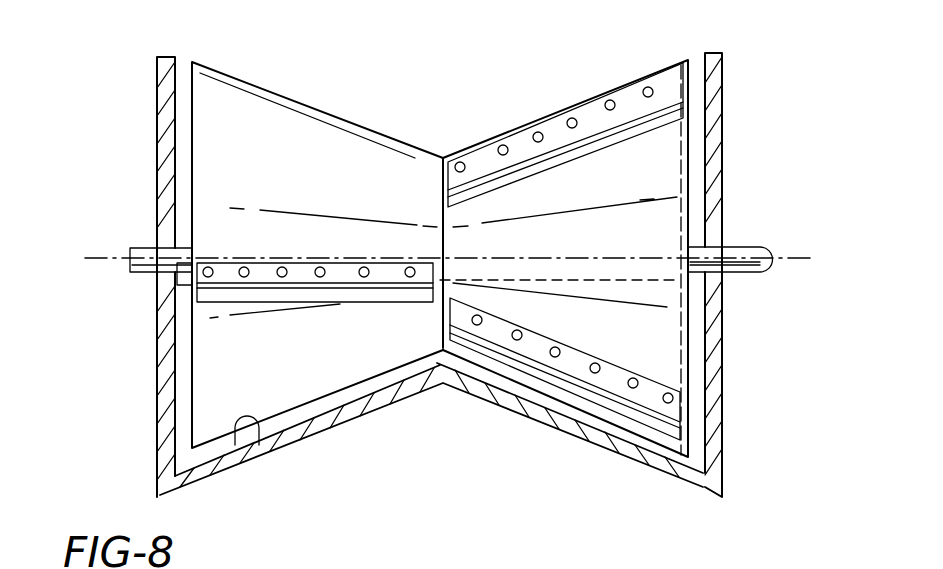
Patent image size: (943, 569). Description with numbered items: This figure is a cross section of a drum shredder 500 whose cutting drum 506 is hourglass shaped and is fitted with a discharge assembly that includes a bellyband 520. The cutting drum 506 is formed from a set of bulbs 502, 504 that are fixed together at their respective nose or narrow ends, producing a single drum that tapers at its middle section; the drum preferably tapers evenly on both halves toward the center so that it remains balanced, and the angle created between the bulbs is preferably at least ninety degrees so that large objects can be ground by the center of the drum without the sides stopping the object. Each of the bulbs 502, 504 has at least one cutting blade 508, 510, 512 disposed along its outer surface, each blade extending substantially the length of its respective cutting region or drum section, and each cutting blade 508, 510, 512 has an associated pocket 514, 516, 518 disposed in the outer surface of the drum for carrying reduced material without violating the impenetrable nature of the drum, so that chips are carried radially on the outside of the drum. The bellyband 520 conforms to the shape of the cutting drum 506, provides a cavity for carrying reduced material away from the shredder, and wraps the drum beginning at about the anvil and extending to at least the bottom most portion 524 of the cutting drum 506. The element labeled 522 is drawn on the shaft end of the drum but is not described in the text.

The drum shredder 500 is at (105, 178).
The bulb 502 is at (210, 358).
The bulb 504 is at (660, 226).
The cutting drum 506 is at (443, 158).
The cutting blade 508 is at (337, 270).
The cutting blade 510 is at (553, 130).
The cutting blade 512 is at (653, 382).
The pocket 514 is at (323, 293).
The pocket 516 is at (580, 143).
The pocket 518 is at (613, 413).
The bellyband 520 is at (511, 387).
The shaft 522 is at (157, 290).
The bottom most portion 524 is at (262, 446).